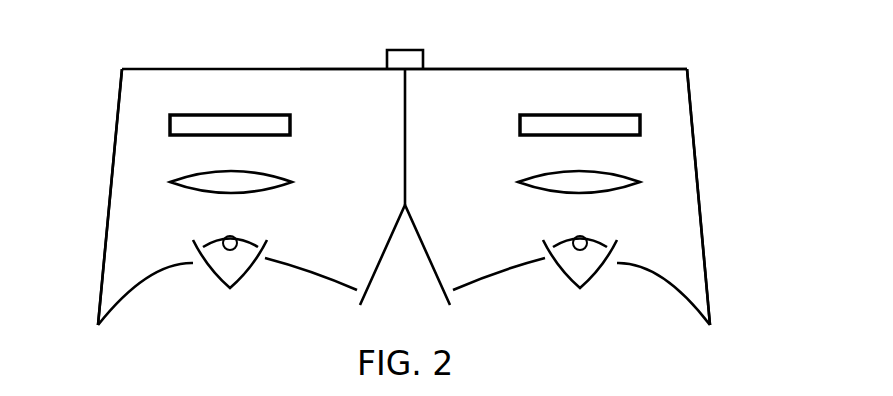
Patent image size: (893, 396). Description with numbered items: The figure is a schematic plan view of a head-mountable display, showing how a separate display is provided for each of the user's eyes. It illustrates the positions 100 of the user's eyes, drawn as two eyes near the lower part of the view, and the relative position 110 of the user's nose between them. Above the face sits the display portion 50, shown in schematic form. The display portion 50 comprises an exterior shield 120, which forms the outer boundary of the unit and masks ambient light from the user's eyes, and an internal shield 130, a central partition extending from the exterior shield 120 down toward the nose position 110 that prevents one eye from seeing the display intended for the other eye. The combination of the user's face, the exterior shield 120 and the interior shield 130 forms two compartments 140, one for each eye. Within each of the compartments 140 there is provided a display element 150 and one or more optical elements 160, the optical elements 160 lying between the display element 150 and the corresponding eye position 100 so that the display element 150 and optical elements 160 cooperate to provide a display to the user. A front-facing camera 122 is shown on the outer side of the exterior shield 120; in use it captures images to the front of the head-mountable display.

The display portion 50 is at (673, 68).
The positions of the user's eyes 100 is at (238, 272).
The relative position of the user's nose 110 is at (427, 252).
The exterior shield 120 is at (480, 68).
The front-facing camera 122 is at (405, 50).
The internal shield 130 is at (408, 135).
The compartments 140 is at (277, 88).
The display element 150 is at (190, 125).
The optical elements 160 is at (167, 182).